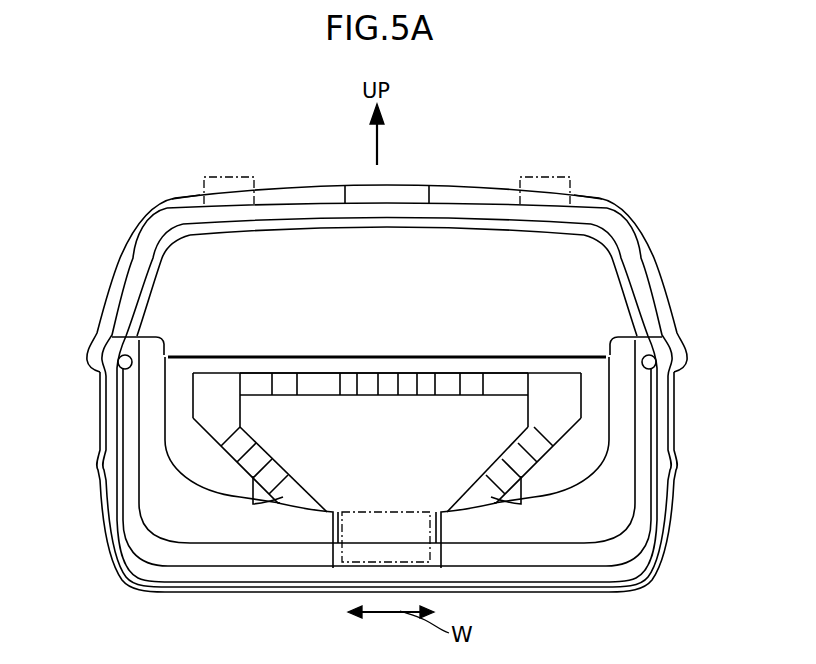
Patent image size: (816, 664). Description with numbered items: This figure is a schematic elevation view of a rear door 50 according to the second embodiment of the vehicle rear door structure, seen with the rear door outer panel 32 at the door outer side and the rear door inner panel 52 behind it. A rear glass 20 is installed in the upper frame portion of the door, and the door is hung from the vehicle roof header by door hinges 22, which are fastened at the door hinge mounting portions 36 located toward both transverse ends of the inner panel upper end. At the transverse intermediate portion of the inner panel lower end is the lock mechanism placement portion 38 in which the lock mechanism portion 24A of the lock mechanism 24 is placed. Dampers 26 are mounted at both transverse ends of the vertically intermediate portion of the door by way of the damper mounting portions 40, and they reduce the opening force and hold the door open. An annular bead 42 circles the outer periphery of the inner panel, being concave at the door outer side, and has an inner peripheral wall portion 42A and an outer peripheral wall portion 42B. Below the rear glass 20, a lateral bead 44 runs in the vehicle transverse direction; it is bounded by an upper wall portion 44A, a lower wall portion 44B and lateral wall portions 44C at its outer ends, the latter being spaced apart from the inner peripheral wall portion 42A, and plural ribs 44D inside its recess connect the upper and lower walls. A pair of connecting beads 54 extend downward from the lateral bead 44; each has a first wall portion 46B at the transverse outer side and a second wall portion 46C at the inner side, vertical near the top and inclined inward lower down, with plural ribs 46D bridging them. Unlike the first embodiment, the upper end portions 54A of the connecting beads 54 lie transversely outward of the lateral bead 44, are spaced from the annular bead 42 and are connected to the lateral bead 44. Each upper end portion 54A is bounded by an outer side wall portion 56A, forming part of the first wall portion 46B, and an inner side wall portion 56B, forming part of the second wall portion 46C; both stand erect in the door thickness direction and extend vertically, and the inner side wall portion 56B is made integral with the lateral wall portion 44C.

The rear glass 20 is at (303, 240).
The door hinges 22 is at (222, 177).
The lock mechanism 24 is at (387, 497).
The lock mechanism portion 24A is at (363, 564).
The dampers 26 is at (146, 384).
The rear door outer panel 32 is at (678, 482).
The door hinge mounting portions 36 is at (191, 199).
The lock mechanism placement portion 38 is at (435, 547).
The damper mounting portions 40 is at (112, 342).
The annular bead 42 is at (156, 241).
The inner peripheral wall portion 42A is at (182, 500).
The outer peripheral wall portion 42B is at (95, 462).
The lateral bead 44 is at (401, 369).
The upper wall portion 44A is at (447, 376).
The lower wall portion 44B is at (403, 397).
The lateral wall portions 44C is at (272, 388).
The ribs 44D is at (341, 388).
The first wall portions 46B is at (250, 488).
The second wall portions 46C is at (289, 473).
The ribs 46D is at (283, 497).
The rear door 50 is at (704, 221).
The rear door inner panel 52 is at (670, 524).
The connecting beads 54 is at (291, 442).
The upper end portions 54A is at (214, 378).
The outer side wall portion 56A is at (200, 390).
The inner side wall portion 56B is at (242, 380).